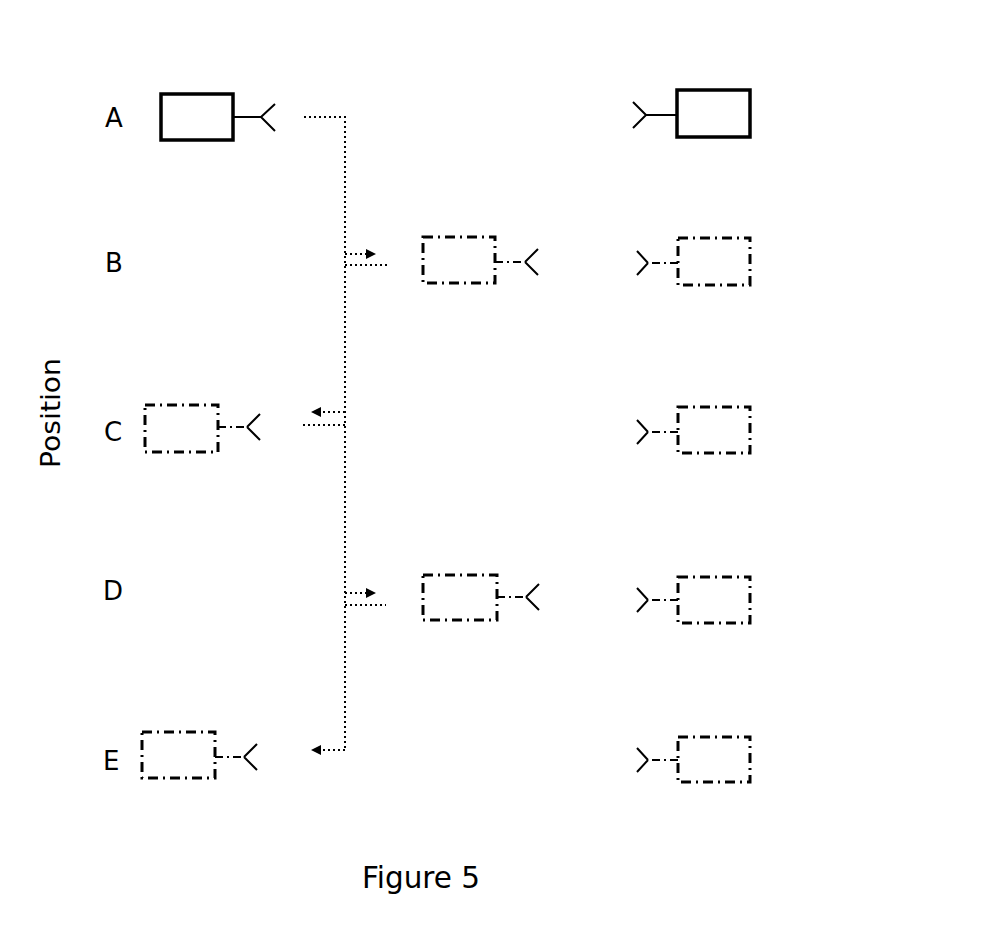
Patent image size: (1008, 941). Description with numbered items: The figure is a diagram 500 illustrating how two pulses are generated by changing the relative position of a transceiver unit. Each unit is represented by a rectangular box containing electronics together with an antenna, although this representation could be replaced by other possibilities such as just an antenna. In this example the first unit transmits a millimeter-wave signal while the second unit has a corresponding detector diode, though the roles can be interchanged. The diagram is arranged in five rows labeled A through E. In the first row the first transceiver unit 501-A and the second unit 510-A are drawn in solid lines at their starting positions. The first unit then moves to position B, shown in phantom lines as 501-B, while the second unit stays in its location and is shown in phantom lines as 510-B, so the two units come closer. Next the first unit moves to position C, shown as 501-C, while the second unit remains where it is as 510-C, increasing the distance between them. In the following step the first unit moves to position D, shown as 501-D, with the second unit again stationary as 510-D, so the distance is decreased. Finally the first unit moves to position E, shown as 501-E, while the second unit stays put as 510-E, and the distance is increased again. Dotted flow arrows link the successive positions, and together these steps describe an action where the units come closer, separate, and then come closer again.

The diagram 500 is at (247, 834).
The first transceiver unit at position A 501-A is at (197, 93).
The first transceiver unit at position B 501-B is at (443, 237).
The first transceiver unit at position C 501-C is at (168, 405).
The first transceiver unit at position D 501-D is at (440, 577).
The first transceiver unit at position E 501-E is at (158, 733).
The second transceiver unit at position A 510-A is at (720, 90).
The second transceiver unit at position B 510-B is at (725, 238).
The second transceiver unit at position C 510-C is at (730, 407).
The second transceiver unit at position D 510-D is at (722, 577).
The second transceiver unit at position E 510-E is at (725, 737).